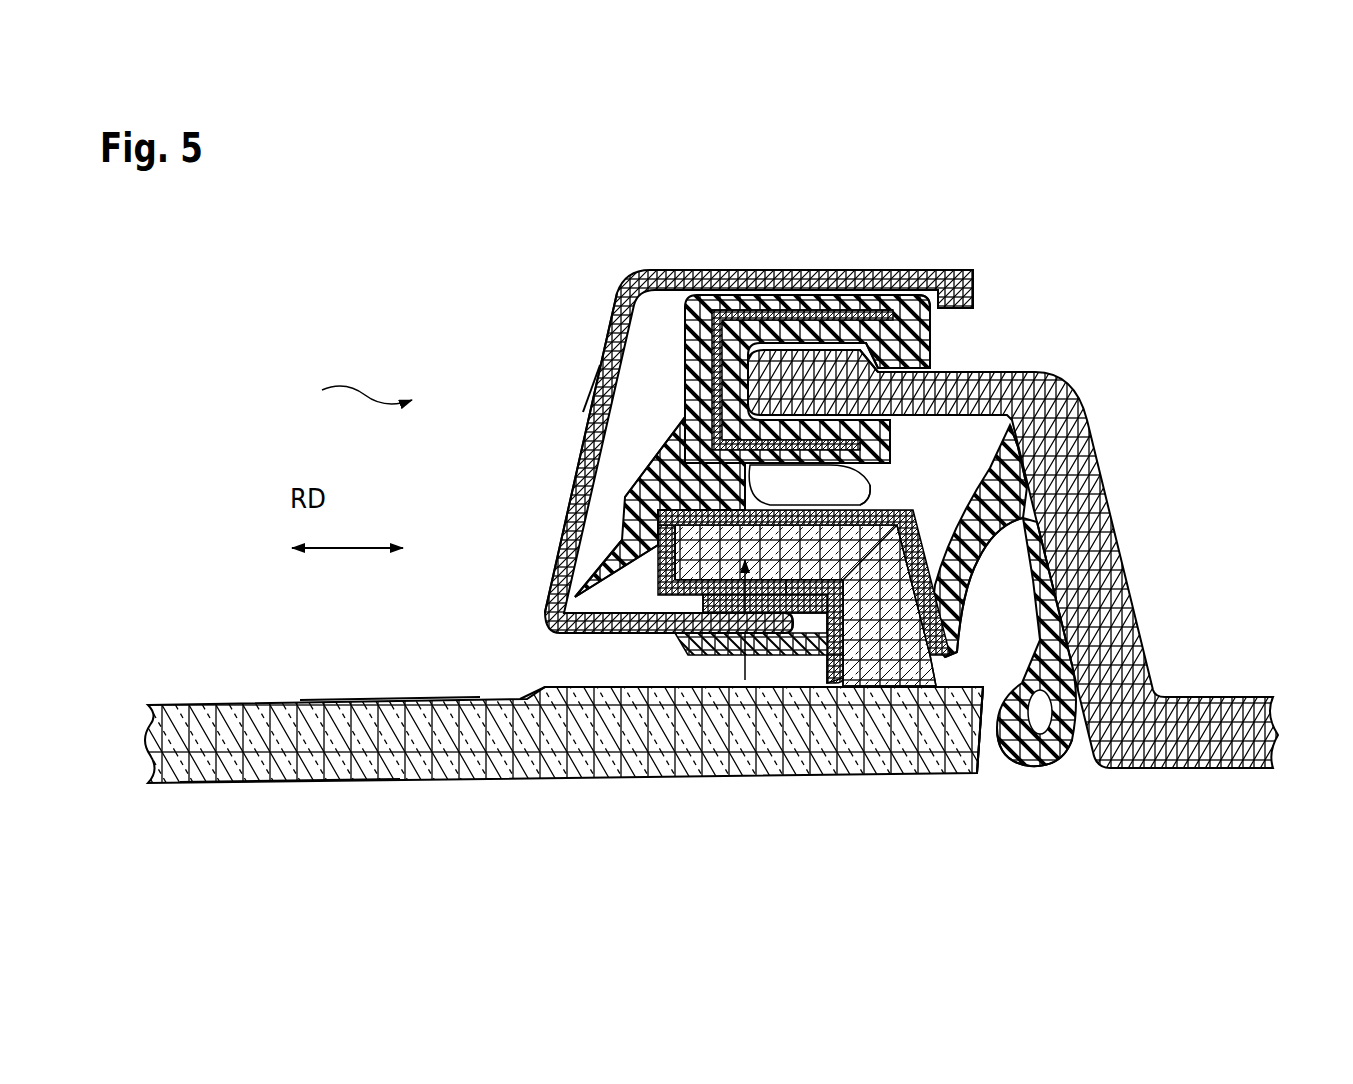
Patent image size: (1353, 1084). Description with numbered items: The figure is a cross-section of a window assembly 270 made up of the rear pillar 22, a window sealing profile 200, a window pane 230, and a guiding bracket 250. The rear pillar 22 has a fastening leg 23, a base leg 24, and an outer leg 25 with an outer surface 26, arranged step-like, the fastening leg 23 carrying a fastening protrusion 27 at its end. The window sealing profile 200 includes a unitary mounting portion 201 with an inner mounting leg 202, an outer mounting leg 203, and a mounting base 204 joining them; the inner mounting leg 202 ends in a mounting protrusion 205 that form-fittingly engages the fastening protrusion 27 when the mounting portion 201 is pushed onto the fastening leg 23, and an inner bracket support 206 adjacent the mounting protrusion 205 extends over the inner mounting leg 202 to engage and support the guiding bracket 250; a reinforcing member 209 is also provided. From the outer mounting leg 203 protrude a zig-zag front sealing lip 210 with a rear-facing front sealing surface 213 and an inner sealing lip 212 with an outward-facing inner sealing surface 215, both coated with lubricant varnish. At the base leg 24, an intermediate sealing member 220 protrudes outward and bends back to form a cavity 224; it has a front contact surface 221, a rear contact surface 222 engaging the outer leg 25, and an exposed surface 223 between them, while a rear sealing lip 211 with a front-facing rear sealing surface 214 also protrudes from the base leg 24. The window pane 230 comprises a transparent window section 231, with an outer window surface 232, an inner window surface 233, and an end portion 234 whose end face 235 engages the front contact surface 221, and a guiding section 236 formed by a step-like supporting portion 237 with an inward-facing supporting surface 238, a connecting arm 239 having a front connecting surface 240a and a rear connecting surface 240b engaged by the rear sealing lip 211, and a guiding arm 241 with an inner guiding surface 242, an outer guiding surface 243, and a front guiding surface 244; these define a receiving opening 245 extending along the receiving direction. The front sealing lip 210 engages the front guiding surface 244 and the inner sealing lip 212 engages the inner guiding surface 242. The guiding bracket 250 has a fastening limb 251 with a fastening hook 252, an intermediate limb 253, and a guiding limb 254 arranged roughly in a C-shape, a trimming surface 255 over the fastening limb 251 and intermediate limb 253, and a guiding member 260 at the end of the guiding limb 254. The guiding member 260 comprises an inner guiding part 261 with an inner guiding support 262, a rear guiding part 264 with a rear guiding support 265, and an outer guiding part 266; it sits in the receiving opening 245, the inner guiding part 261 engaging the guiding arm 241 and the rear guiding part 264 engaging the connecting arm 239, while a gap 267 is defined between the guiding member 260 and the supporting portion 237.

The rear pillar 22 is at (1125, 548).
The fastening leg 23 is at (1008, 385).
The base leg 24 is at (1082, 465).
The outer leg 25 is at (1235, 715).
The outer surface 26 is at (1175, 770).
The fastening protrusion 27 is at (815, 353).
The window sealing profile 200 is at (843, 332).
The mounting portion 201 is at (897, 325).
The inner mounting leg 202 is at (860, 296).
The outer mounting leg 203 is at (887, 445).
The mounting base 204 is at (697, 333).
The mounting protrusion 205 is at (925, 353).
The inner bracket support 206 is at (765, 296).
The reinforcing member 209 is at (805, 296).
The front sealing lip 210 is at (605, 496).
The rear sealing lip 211 is at (1005, 503).
The inner sealing lip 212 is at (774, 488).
The front sealing surface 213 is at (640, 560).
The rear sealing surface 214 is at (843, 637).
The inner sealing surface 215 is at (872, 492).
The intermediate sealing member 220 is at (1081, 643).
The front contact surface 221 is at (1000, 745).
The rear contact surface 222 is at (1076, 705).
The exposed surface 223 is at (1037, 767).
The cavity 224 is at (1047, 712).
The window pane 230 is at (240, 700).
The window section 231 is at (298, 740).
The outer window surface 232 is at (240, 783).
The inner window surface 233 is at (397, 697).
The end portion 234 is at (943, 727).
The end face 235 is at (978, 700).
The guiding section 236 is at (952, 655).
The supporting portion 237 is at (597, 705).
The supporting surface 238 is at (528, 697).
The connecting arm 239 is at (932, 704).
The front connecting surface 240a is at (835, 683).
The rear connecting surface 240b is at (955, 622).
The guiding arm 241 is at (897, 512).
The inner guiding surface 242 is at (690, 545).
The outer guiding surface 243 is at (849, 585).
The front guiding surface 244 is at (655, 582).
The receiving opening 245 is at (665, 660).
The guiding bracket 250 is at (617, 290).
The fastening limb 251 is at (705, 272).
The fastening hook 252 is at (965, 275).
The intermediate limb 253 is at (605, 365).
The guiding limb 254 is at (583, 625).
The trimming surface 255 is at (940, 268).
The guiding member 260 is at (757, 671).
The inner guiding part 261 is at (722, 600).
The inner guiding support 262 is at (786, 592).
The rear guiding part 264 is at (807, 655).
The rear guiding support 265 is at (787, 645).
The outer guiding part 266 is at (712, 655).
The gap 267 is at (722, 660).
The window assembly 270 is at (342, 390).